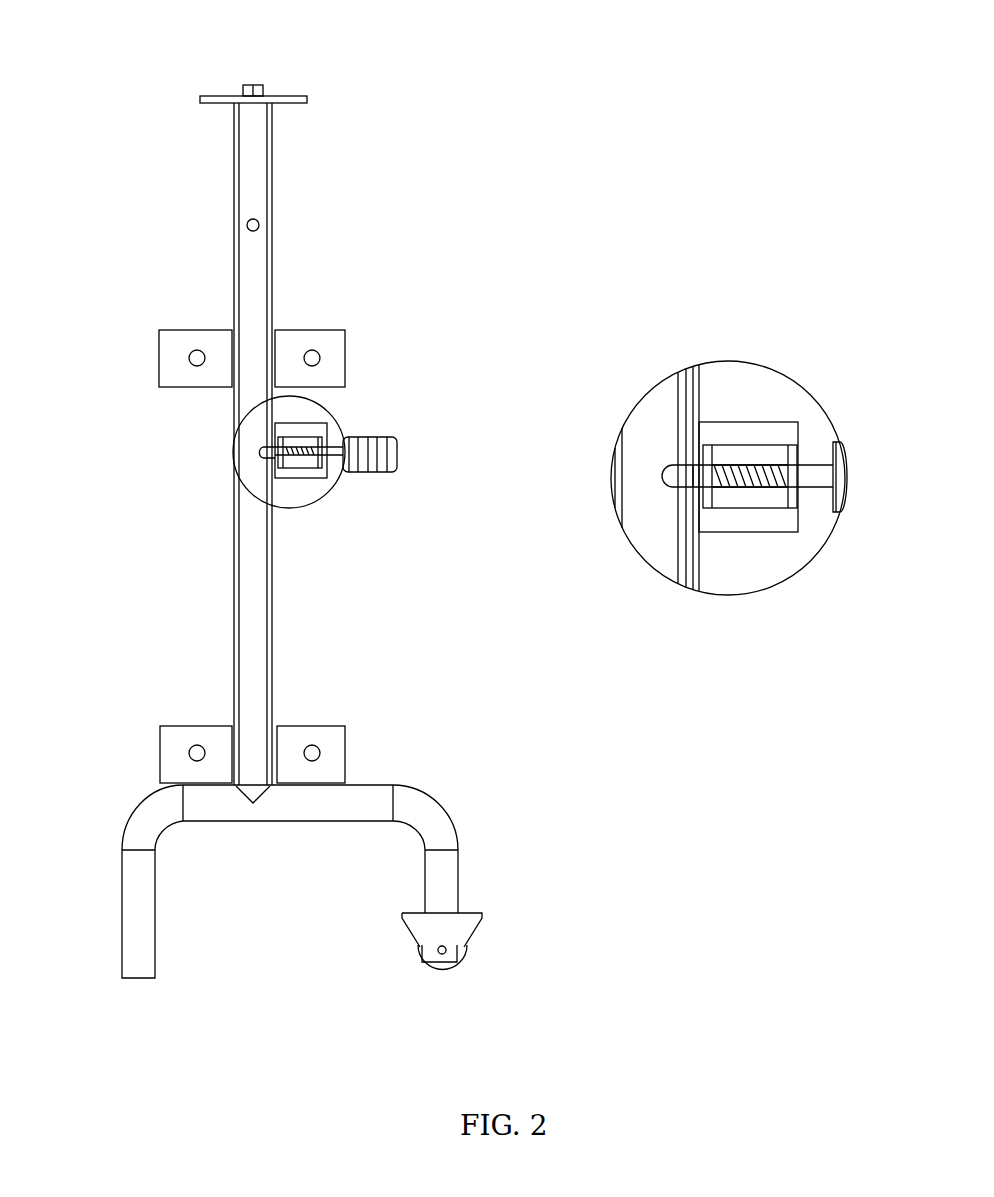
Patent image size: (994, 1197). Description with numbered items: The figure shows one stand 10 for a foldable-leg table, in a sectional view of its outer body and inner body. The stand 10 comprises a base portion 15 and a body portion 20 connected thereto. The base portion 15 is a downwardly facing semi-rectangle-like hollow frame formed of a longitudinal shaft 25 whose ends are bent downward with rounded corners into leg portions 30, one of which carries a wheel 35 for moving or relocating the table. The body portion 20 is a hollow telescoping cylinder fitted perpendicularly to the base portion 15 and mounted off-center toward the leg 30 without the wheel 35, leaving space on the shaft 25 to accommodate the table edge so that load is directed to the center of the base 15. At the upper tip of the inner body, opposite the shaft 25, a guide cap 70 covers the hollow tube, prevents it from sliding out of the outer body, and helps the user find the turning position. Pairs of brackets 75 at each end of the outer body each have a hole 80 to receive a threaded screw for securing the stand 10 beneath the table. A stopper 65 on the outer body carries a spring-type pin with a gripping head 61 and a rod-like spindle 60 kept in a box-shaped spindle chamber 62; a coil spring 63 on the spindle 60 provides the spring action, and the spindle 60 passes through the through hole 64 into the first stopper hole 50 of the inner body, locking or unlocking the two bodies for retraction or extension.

The stand 10 is at (365, 193).
The base portion 15 is at (498, 752).
The body portion 20 is at (287, 648).
The shaft 25 is at (298, 807).
The leg portion 30 is at (135, 908).
The wheel 35 is at (452, 978).
The first stopper hole 50 is at (677, 493).
The spindle 60 is at (258, 462).
The head 61 is at (377, 448).
The spindle chamber 62 is at (303, 462).
The coil spring 63 is at (757, 480).
The through hole 64 is at (698, 497).
The stopper 65 is at (412, 463).
The guide cap 70 is at (280, 92).
The brackets 75 is at (330, 358).
The hole 80 is at (197, 347).